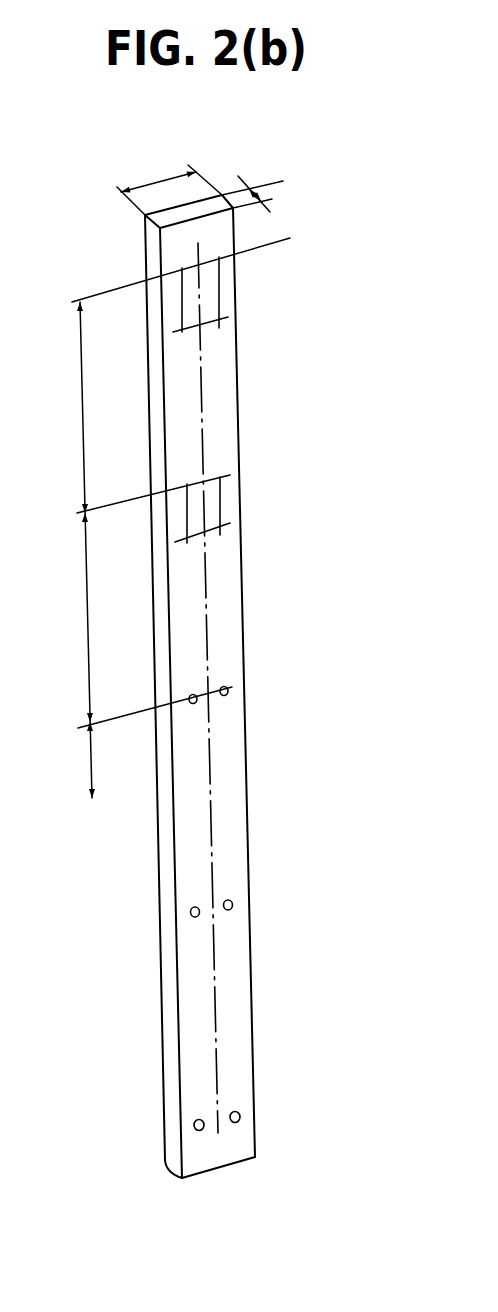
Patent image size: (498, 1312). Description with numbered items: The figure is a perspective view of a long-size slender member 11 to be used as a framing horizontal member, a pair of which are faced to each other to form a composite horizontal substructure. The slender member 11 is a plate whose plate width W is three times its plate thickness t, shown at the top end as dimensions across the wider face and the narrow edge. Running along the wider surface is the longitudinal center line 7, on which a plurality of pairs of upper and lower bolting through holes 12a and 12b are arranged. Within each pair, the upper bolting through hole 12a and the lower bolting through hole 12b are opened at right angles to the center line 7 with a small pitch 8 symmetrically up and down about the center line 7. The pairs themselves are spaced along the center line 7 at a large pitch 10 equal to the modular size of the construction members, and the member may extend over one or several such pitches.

The longitudinal center line 7 is at (212, 812).
The small pitch 8 is at (203, 322).
The large pitch 10 is at (80, 395).
The slender member 11 is at (145, 267).
The upper bolting through hole 12a is at (218, 258).
The lower bolting through hole 12b is at (182, 268).
The plate width W is at (163, 184).
The plate thickness t is at (262, 202).